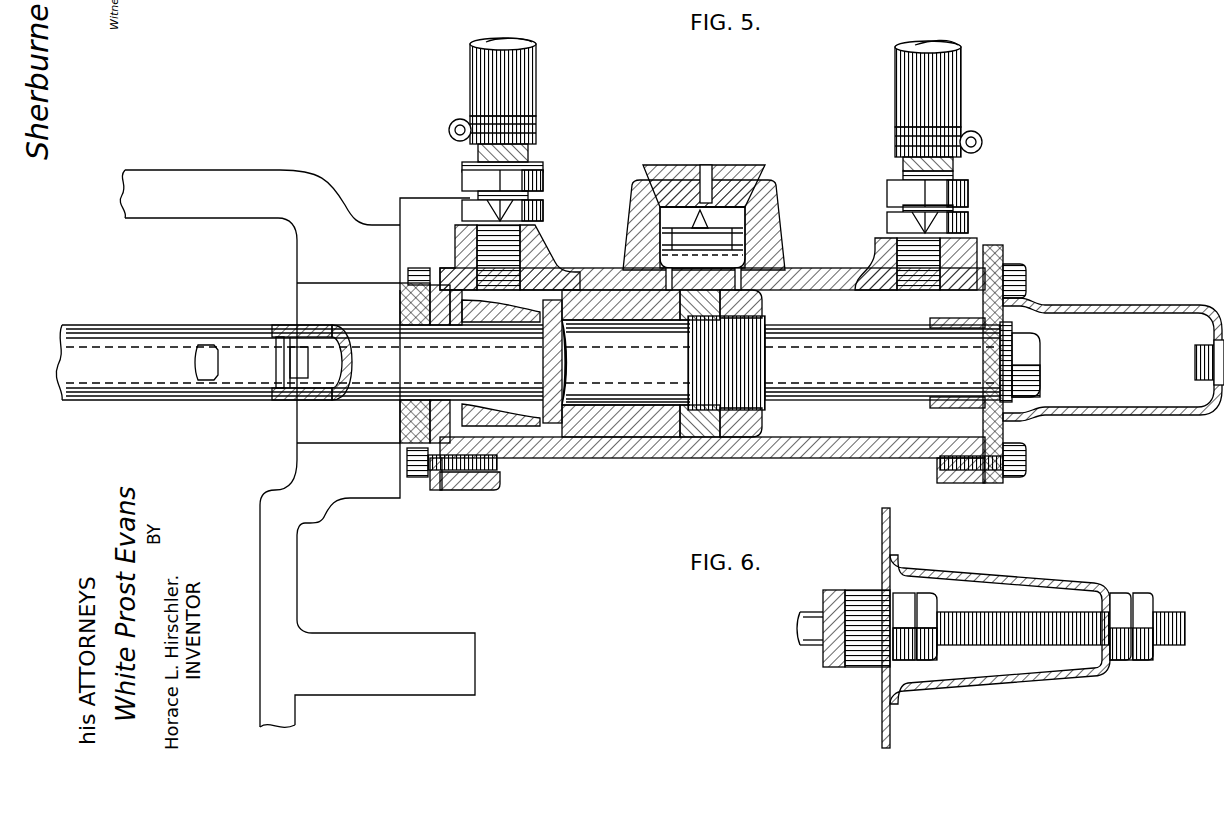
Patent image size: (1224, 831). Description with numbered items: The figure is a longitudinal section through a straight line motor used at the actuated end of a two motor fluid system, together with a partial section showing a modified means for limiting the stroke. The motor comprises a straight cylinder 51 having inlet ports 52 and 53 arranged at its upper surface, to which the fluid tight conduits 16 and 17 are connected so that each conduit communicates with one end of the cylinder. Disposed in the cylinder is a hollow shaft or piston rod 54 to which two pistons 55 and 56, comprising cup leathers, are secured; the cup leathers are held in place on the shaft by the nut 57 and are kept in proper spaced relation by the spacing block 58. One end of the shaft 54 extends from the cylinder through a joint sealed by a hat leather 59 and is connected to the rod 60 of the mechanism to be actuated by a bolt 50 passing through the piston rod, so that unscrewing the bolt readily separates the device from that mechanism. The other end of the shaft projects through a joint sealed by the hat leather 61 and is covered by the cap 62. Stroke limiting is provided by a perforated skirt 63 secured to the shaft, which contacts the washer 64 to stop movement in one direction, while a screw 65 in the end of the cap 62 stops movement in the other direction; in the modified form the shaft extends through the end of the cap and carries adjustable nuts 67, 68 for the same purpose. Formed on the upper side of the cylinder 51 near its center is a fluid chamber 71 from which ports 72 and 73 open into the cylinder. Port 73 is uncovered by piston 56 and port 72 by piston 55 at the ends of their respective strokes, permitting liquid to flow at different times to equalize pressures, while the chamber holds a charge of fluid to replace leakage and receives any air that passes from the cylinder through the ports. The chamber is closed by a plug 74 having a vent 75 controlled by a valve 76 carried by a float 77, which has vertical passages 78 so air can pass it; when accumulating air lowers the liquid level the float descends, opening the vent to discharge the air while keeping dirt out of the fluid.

In FIG. 5, the conduit 16 is at (533, 85).
In FIG. 5, the conduit 17 is at (958, 96).
In FIG. 5, the bolt 50 is at (292, 400).
In FIG. 5, the straight cylinder 51 is at (818, 450).
In FIG. 5, the inlet port 52 is at (522, 265).
In FIG. 5, the inlet port 53 is at (905, 283).
In FIG. 5, the shaft 54 is at (855, 396).
In FIG. 5, the piston 55 is at (552, 423).
In FIG. 5, the piston 56 is at (697, 437).
In FIG. 5, the nut 57 is at (740, 437).
In FIG. 5, the spacing block 58 is at (635, 437).
In FIG. 5, the hat leather 59 is at (410, 305).
In FIG. 5, the rod 60 is at (215, 400).
In FIG. 5, the hat leather 61 is at (1003, 258).
In FIG. 5, the cap 62 is at (1080, 308).
In FIG. 5, the perforated skirt 63 is at (515, 420).
In FIG. 5, the washer 64 is at (410, 425).
In FIG. 5, the screw 65 is at (1205, 345).
In FIG. 6, the adjustable nut 67 is at (935, 600).
In FIG. 6, the adjustable nut 68 is at (1118, 598).
In FIG. 5, the fluid chamber 71 is at (745, 255).
In FIG. 5, the port 72 is at (665, 284).
In FIG. 5, the port 73 is at (740, 280).
In FIG. 5, the plug 74 is at (745, 188).
In FIG. 5, the vent 75 is at (706, 185).
In FIG. 5, the valve 76 is at (712, 218).
In FIG. 5, the float 77 is at (745, 230).
In FIG. 5, the passages 78 is at (662, 230).